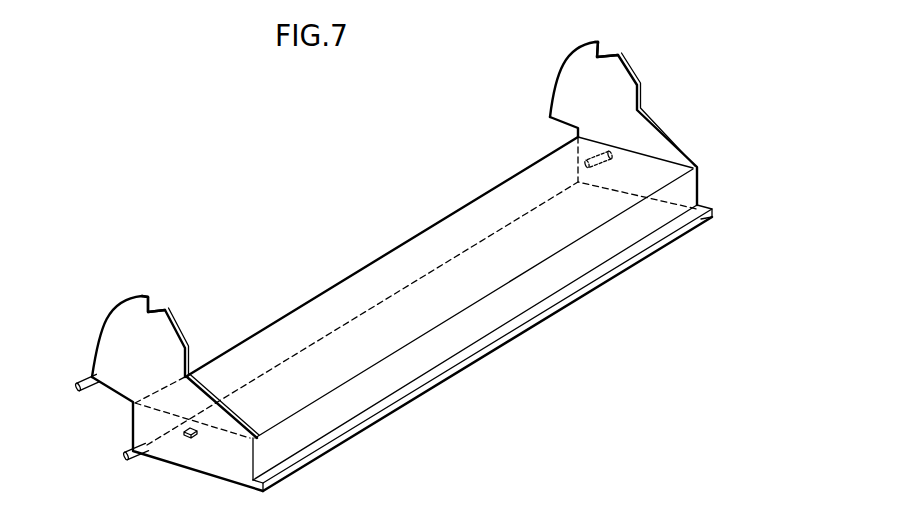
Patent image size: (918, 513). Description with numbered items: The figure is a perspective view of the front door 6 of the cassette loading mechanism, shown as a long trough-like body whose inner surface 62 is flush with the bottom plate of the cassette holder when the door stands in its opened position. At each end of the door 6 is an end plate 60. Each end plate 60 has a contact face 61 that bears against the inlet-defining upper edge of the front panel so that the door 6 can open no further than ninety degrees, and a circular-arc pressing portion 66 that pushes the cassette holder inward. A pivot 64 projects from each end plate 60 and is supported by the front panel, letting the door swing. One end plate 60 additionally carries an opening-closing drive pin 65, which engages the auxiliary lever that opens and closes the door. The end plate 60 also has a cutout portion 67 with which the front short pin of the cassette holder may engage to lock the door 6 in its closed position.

The front door 6 is at (338, 200).
The end plate 60 is at (98, 362).
The contact face 61 is at (147, 300).
The inner surface 62 is at (380, 277).
The pivot 64 is at (137, 463).
The opening-closing drive pin 65 is at (84, 378).
The circular-arc pressing portion 66 is at (110, 318).
The cutout portion 67 is at (193, 362).